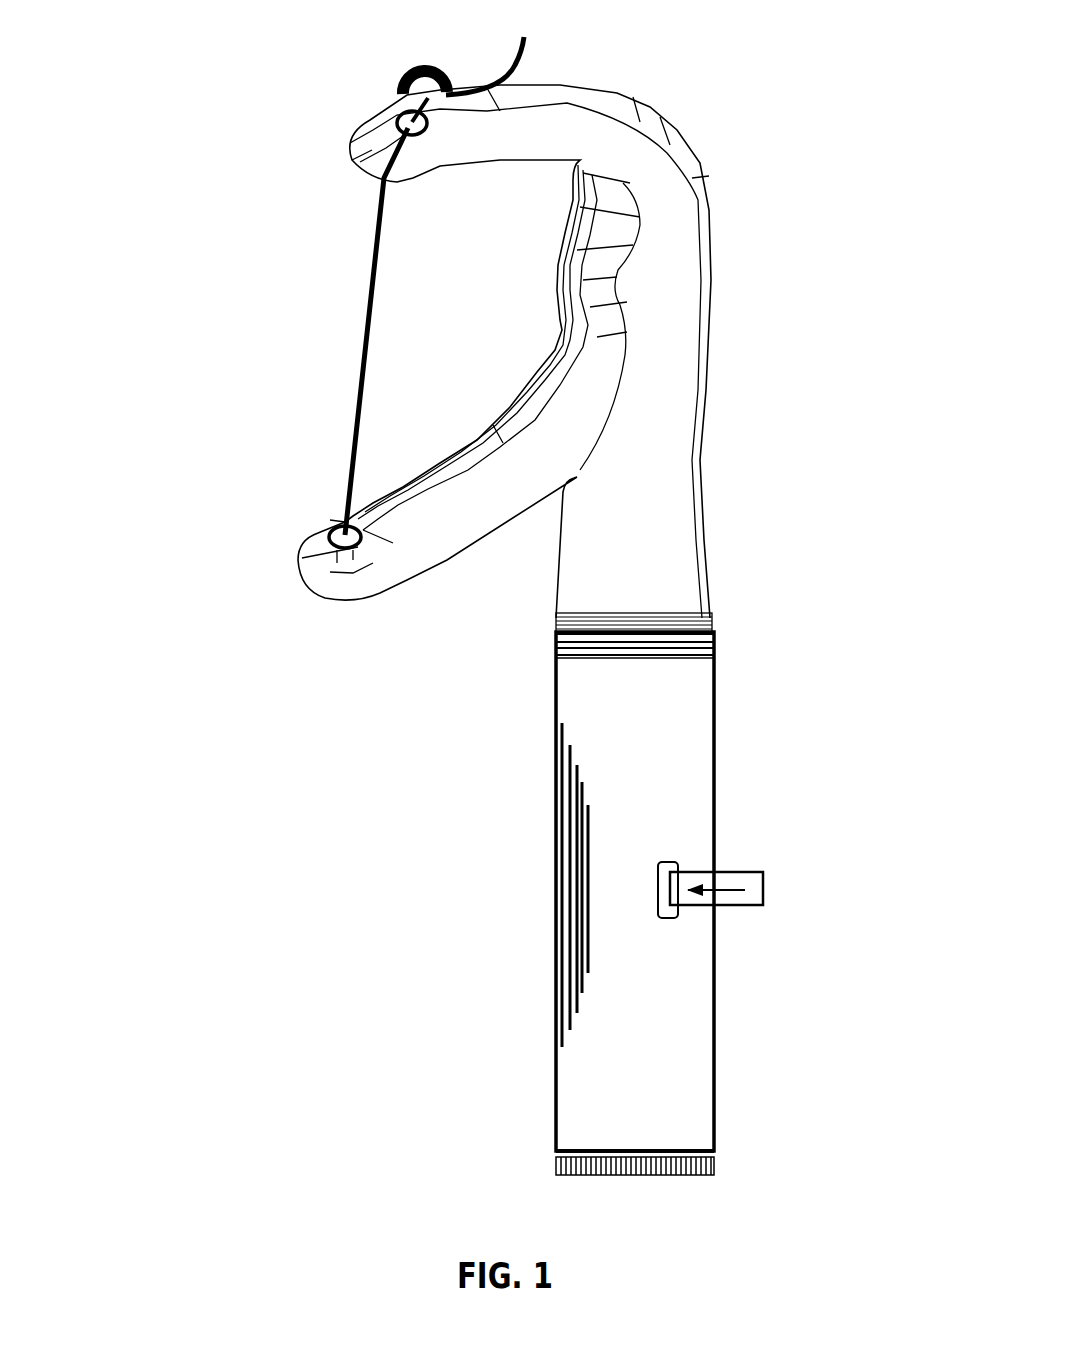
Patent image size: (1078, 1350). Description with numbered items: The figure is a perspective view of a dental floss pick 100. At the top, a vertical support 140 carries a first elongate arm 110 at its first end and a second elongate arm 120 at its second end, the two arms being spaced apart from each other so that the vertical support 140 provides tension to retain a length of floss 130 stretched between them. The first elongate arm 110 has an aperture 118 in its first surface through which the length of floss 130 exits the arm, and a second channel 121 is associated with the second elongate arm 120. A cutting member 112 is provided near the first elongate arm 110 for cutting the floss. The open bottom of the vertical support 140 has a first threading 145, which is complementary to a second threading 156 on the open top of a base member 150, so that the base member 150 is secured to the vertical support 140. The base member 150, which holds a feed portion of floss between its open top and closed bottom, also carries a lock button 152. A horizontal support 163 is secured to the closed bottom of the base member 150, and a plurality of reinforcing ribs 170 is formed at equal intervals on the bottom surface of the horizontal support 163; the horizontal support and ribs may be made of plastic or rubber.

The dental floss pick 100 is at (108, 45).
The first elongate arm 110 is at (326, 162).
The cutting member 112 is at (460, 68).
The aperture 118 is at (392, 120).
The second elongate arm 120 is at (290, 584).
The second channel 121 is at (312, 525).
The length of floss 130 is at (340, 365).
The vertical support 140 is at (728, 272).
The first threading 145 is at (722, 605).
The base member 150 is at (542, 850).
The lock button 152 is at (777, 880).
The second threading 156 is at (730, 650).
The horizontal support 163 is at (540, 1150).
The plurality of reinforcing ribs 170 is at (722, 1173).